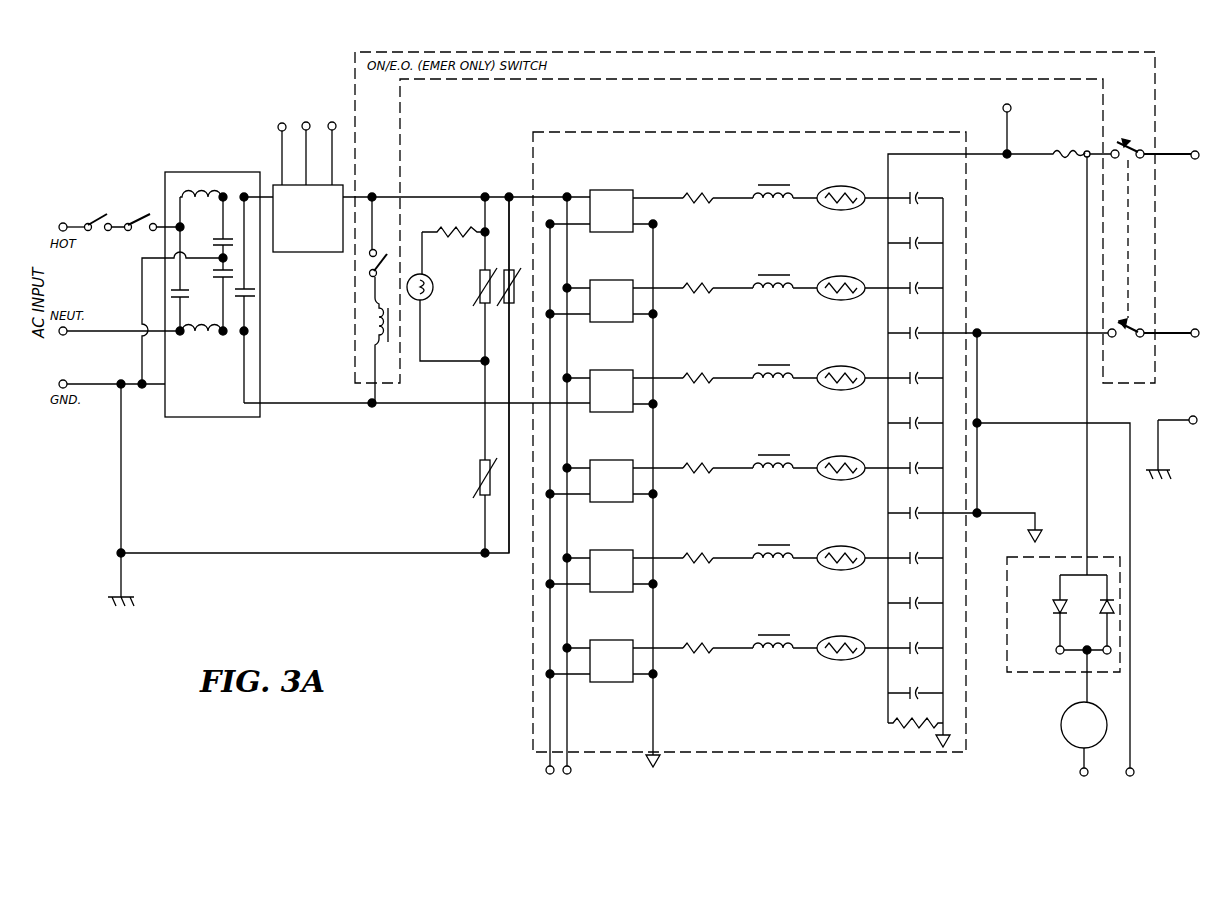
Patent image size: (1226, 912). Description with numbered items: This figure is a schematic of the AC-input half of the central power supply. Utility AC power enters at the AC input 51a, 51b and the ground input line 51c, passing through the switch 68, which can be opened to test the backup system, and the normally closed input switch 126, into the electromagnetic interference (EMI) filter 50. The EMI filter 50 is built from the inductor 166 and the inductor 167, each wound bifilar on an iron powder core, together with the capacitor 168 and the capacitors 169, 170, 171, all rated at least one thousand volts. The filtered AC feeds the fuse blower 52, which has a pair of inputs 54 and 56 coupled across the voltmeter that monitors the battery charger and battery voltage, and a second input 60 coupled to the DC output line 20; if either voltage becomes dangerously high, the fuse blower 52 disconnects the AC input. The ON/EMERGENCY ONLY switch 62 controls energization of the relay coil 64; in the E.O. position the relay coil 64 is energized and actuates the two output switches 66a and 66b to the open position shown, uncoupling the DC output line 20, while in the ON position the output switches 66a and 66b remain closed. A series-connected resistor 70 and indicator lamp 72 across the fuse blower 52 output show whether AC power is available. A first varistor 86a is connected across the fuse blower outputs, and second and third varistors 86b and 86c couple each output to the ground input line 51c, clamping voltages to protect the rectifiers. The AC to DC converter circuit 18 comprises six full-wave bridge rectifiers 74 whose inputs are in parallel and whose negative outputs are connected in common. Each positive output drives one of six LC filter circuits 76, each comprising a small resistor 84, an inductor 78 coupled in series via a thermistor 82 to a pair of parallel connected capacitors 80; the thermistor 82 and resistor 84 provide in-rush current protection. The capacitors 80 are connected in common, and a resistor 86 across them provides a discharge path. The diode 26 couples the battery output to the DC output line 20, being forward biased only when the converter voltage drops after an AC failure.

The AC input 51a is at (72, 221).
The AC input 51b is at (63, 336).
The ground input line 51c is at (66, 382).
The switch 68 is at (99, 211).
The input switch 126 is at (143, 213).
The electromagnetic interference (EMI) filter 50 is at (188, 418).
The inductor 166 is at (204, 190).
The inductor 167 is at (200, 338).
The capacitor 168 is at (174, 289).
The capacitor 169 is at (228, 268).
The capacitor 170 is at (247, 297).
The capacitor 171 is at (226, 236).
The fuse blower 52 is at (285, 253).
The input 54 is at (280, 122).
The second input 60 is at (304, 122).
The input 56 is at (334, 126).
The ON/EMERGENCY ONLY switch 62 is at (369, 262).
The relay coil 64 is at (370, 326).
The resistor 70 is at (455, 240).
The indicator lamp 72 is at (427, 300).
The first varistor 86a is at (484, 305).
The second varistor 86b is at (478, 470).
The third varistor 86c is at (511, 265).
The AC to DC converter circuit 18 is at (749, 442).
The full-wave bridge rectifier 74 is at (606, 697).
The LC filter circuit 76 is at (760, 443).
The resistor 84 is at (704, 410).
The inductor 78 is at (775, 433).
The thermistor 82 is at (841, 440).
The capacitors 80 is at (916, 190).
The resistor 86 is at (907, 730).
The output switch 66a is at (1142, 150).
The output switch 66b is at (1142, 330).
The DC output line 20 is at (1167, 190).
The diode 26 is at (1063, 666).